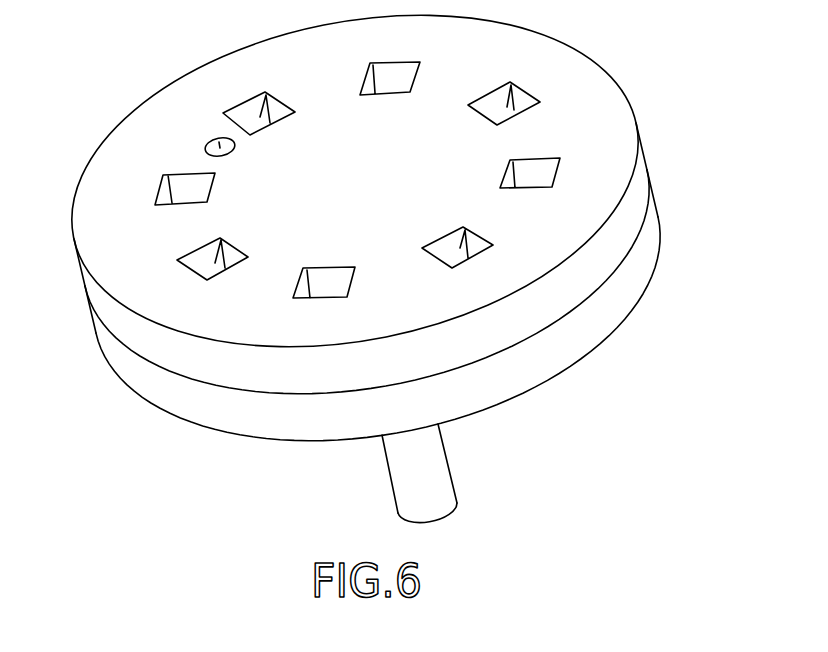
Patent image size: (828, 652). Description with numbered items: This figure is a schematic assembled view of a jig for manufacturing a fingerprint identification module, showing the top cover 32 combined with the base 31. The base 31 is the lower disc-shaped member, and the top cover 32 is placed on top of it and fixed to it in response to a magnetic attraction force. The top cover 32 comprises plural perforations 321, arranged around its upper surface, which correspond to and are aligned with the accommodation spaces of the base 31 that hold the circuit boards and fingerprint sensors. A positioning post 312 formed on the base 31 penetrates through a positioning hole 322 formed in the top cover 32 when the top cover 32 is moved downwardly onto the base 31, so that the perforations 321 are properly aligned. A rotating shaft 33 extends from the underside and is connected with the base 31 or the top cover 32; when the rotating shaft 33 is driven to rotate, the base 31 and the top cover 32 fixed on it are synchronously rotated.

The base 31 is at (220, 410).
The top cover 32 is at (177, 348).
The rotating shaft 33 is at (437, 482).
The positioning post 312 is at (217, 142).
The perforations 321 is at (188, 192).
The positioning hole 322 is at (240, 145).